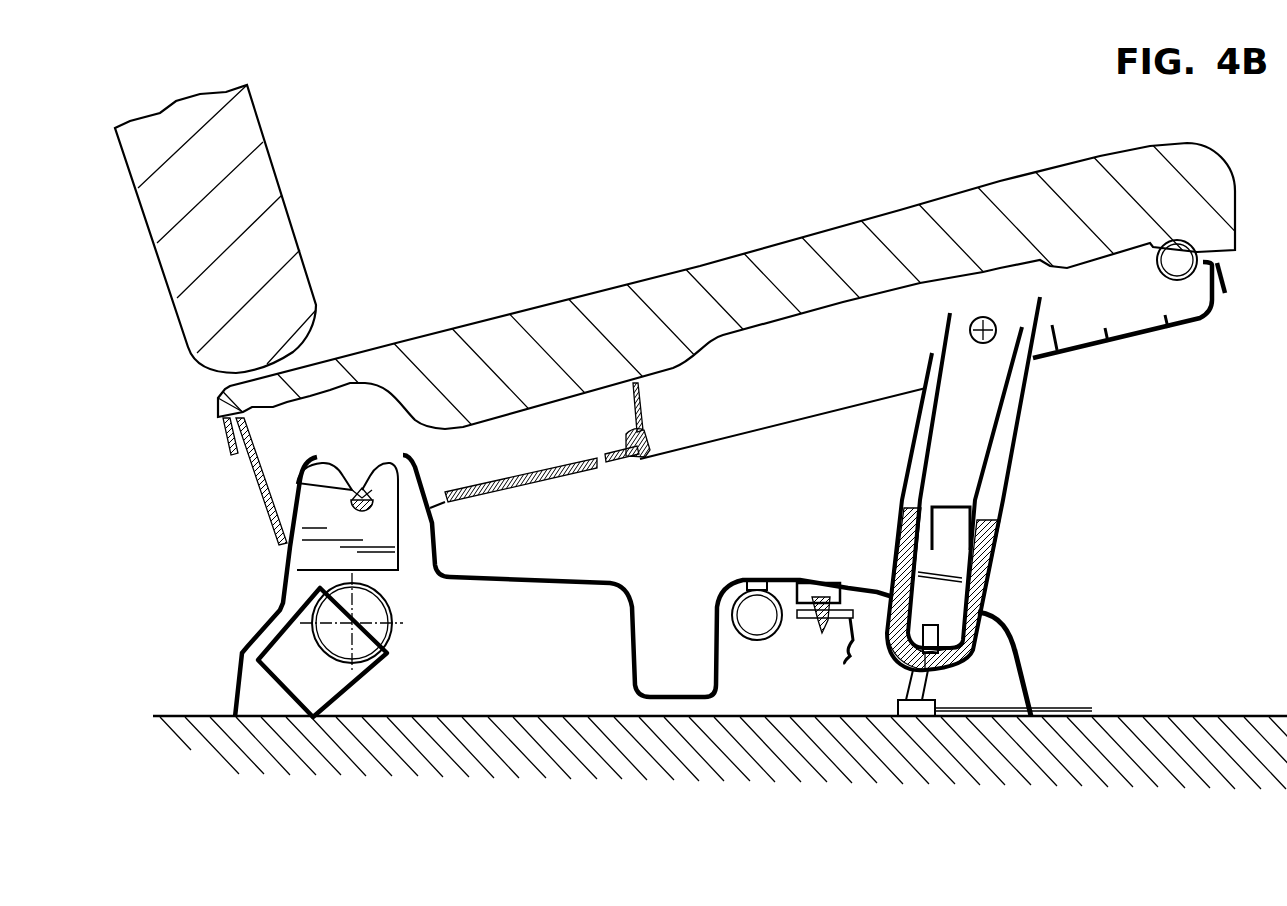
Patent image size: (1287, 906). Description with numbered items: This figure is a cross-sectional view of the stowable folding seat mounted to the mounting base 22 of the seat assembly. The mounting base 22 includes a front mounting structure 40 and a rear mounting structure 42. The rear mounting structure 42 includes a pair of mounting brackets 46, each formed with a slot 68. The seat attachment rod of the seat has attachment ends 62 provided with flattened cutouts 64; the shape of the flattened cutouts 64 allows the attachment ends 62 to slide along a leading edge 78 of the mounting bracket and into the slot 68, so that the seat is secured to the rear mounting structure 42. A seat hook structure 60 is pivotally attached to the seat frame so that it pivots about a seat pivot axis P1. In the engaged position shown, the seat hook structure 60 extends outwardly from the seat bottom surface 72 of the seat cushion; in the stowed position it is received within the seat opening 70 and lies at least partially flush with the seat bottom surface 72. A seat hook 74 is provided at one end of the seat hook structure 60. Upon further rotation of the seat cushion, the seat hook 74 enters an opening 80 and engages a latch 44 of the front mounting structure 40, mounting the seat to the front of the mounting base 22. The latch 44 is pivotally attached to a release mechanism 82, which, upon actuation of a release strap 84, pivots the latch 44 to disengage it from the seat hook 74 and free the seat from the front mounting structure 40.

The mounting base 22 is at (1012, 647).
The front mounting structure 40 is at (991, 684).
The rear mounting structure 42 is at (232, 507).
The latch 44 is at (932, 625).
The mounting brackets 46 is at (315, 513).
The seat hook structure 60 is at (1013, 460).
The attachment ends 62 is at (373, 503).
The flattened cutouts 64 is at (355, 502).
The slot 68 is at (368, 471).
The seat opening 70 is at (617, 468).
The seat bottom surface 72 is at (717, 408).
The seat hook 74 is at (973, 597).
The leading edge 78 is at (356, 492).
The opening 80 is at (887, 593).
The release mechanism 82 is at (902, 712).
The release strap 84 is at (1068, 708).
The seat pivot axis P1 is at (990, 323).